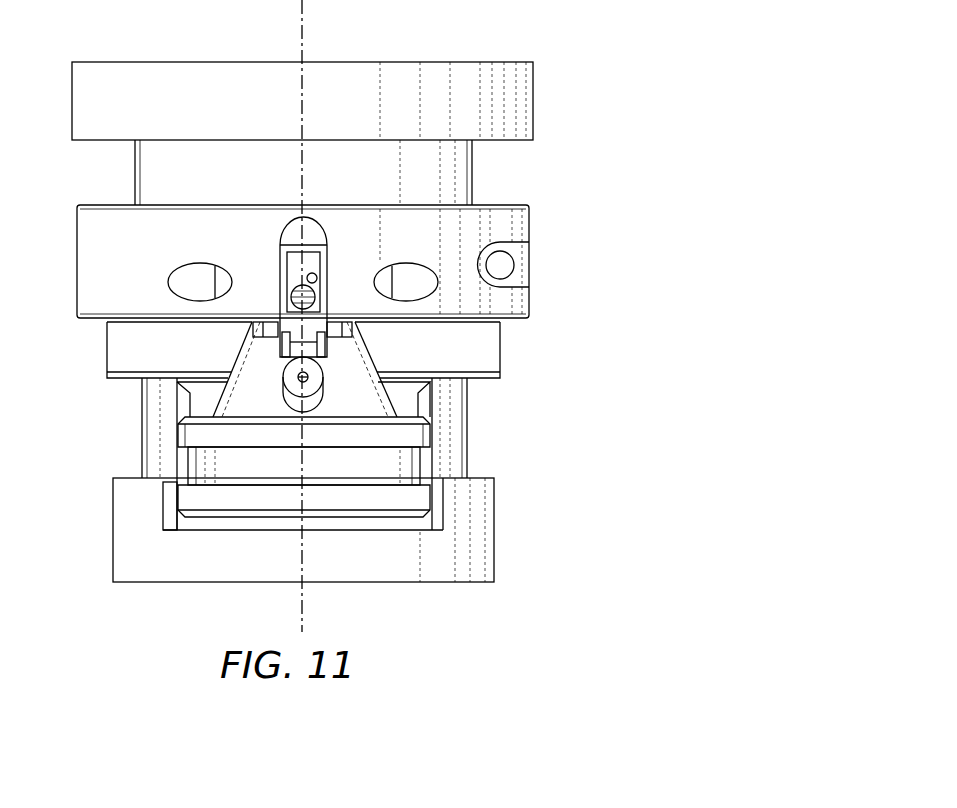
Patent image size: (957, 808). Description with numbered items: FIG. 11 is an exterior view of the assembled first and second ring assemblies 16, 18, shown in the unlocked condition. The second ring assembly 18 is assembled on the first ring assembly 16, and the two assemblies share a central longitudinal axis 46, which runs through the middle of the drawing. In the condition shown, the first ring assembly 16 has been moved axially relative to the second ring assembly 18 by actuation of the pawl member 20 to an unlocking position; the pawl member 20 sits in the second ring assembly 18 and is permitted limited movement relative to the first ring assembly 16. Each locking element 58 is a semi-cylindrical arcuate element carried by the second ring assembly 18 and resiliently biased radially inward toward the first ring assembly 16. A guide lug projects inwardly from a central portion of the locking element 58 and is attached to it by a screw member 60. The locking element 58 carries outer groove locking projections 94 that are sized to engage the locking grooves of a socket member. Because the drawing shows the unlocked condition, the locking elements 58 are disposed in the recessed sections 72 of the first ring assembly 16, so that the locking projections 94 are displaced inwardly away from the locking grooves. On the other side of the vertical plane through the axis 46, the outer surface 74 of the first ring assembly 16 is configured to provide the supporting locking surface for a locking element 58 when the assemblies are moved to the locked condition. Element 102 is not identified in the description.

The first ring assembly 16 is at (508, 92).
The second ring assembly 18 is at (512, 228).
The pawl member 20 is at (302, 271).
The central longitudinal axis 46 is at (302, 27).
The locking element 58 is at (352, 467).
The screw member 60 is at (283, 389).
The recessed section 72 is at (218, 523).
The outer surface 74 is at (467, 412).
The groove locking projections 94 is at (390, 437).
The cone 102 is at (423, 408).